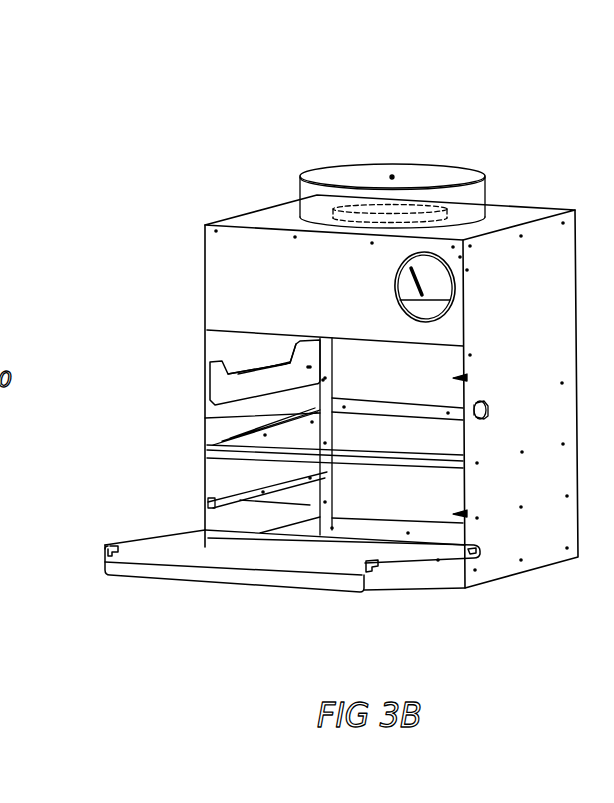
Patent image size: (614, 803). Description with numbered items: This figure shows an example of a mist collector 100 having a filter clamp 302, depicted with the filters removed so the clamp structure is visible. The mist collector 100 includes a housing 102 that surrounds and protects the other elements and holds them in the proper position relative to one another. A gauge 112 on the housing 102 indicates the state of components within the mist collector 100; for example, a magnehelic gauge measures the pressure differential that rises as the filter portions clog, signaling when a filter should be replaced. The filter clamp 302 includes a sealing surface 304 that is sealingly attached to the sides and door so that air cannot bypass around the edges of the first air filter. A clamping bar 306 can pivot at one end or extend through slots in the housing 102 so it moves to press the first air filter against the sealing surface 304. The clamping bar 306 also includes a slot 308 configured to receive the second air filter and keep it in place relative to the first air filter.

The mist collector 100 is at (215, 104).
The housing 102 is at (243, 265).
The gauge 112 is at (487, 400).
The filter clamp 302 is at (238, 399).
The sealing surface 304 is at (223, 452).
The clamping bar 306 is at (258, 373).
The slot 308 is at (210, 375).